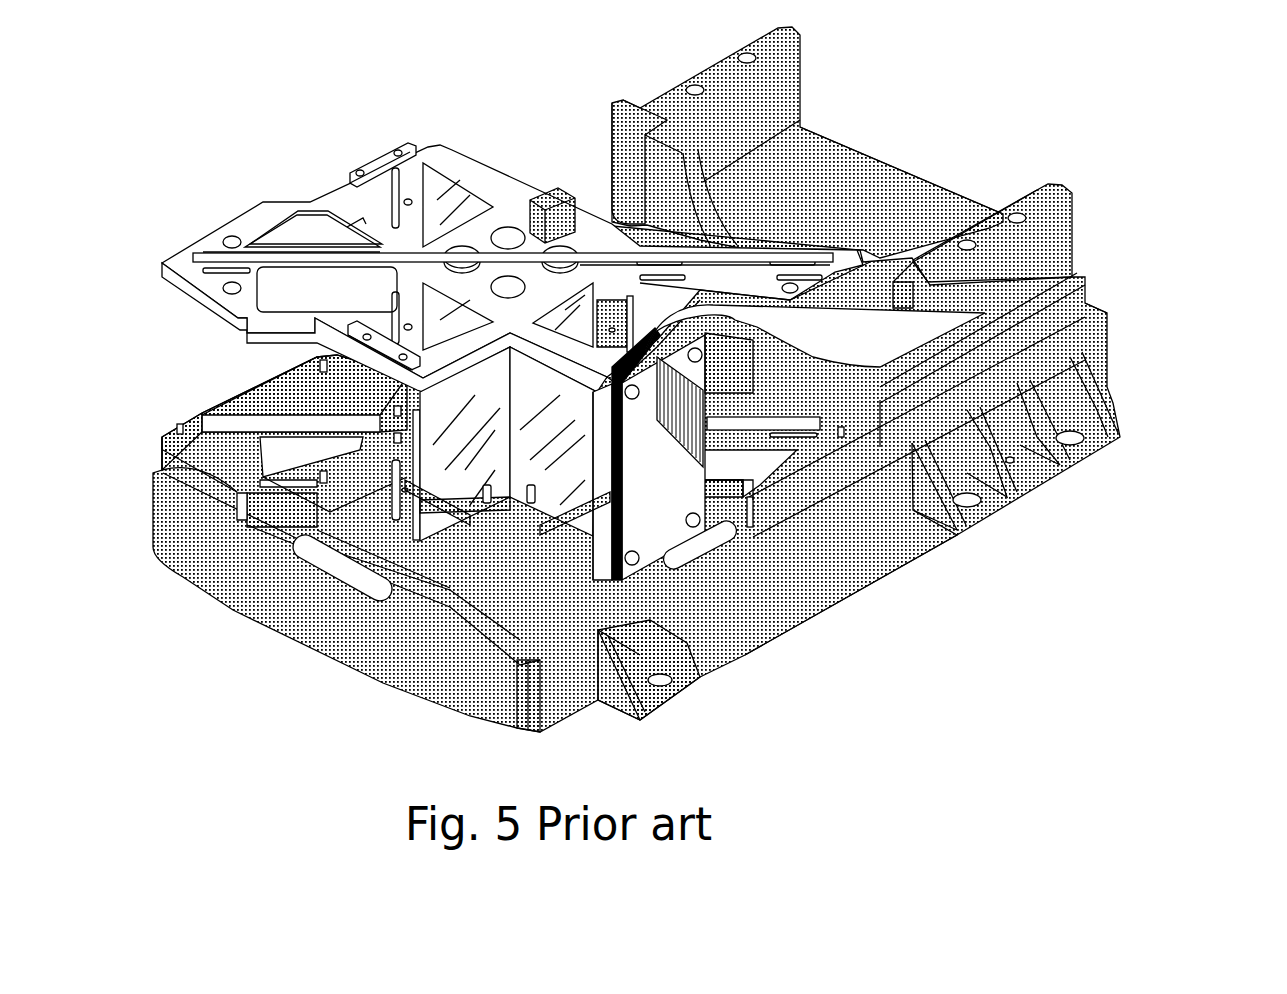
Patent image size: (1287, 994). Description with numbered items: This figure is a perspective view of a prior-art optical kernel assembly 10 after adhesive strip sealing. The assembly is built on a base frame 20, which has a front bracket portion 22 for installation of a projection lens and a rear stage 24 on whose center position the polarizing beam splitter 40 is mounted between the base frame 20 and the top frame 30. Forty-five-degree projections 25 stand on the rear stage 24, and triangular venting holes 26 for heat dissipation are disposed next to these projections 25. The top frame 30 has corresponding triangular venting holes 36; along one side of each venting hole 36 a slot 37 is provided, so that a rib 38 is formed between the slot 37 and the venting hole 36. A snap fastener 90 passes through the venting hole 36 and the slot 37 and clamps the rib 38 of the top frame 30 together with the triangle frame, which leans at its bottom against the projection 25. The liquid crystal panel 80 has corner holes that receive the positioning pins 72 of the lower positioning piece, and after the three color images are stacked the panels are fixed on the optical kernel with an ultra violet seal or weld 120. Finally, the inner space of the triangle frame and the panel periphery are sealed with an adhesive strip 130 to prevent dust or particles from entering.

The optical kernel assembly 10 is at (1127, 128).
The base frame 20 is at (1062, 246).
The front bracket portion 22 is at (882, 178).
The rear stage 24 is at (193, 430).
The 45-degree projection 25 is at (352, 572).
The triangular venting hole 26 is at (437, 590).
The top frame 30 is at (327, 203).
The triangular venting hole 36 is at (440, 190).
The slot 37 is at (387, 170).
The rib 38 is at (398, 150).
The polarizing beam splitter 40 is at (425, 408).
The positioning pin 72 is at (745, 560).
The liquid crystal panel 80 is at (730, 555).
The snap fastener 90 is at (610, 300).
The ultra violet seal or weld 120 is at (767, 553).
The adhesive strip 130 is at (672, 545).